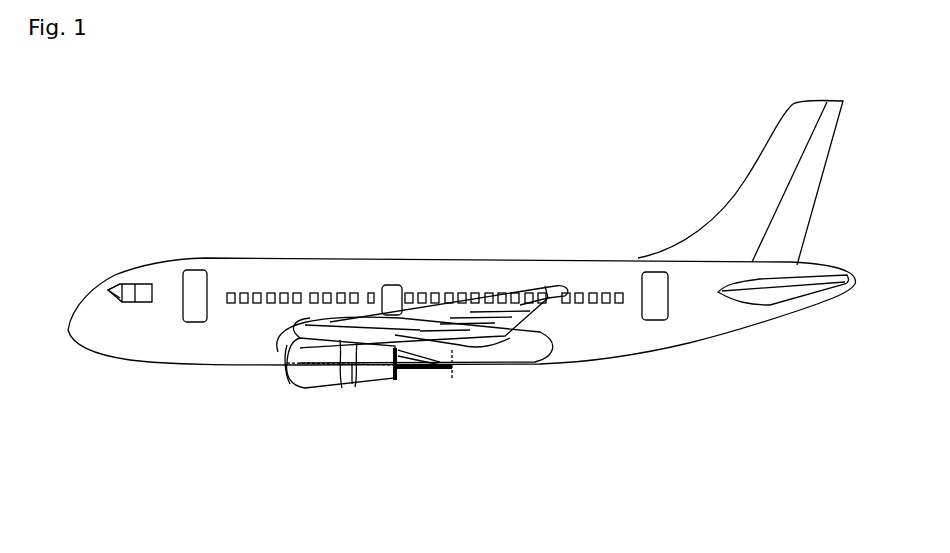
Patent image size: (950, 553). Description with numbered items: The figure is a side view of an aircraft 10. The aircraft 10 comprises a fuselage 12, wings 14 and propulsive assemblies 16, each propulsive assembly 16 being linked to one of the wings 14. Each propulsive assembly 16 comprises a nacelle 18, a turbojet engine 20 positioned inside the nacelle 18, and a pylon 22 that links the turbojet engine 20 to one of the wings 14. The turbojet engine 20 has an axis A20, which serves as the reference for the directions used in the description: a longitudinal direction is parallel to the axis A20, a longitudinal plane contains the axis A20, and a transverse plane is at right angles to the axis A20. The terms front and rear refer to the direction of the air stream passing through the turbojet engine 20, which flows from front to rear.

The aircraft 10 is at (197, 226).
The fuselage 12 is at (320, 258).
The wings 14 is at (428, 326).
The propulsive assembly 16 is at (318, 393).
The nacelle 18 is at (288, 372).
The turbojet engine 20 is at (400, 372).
The axis of the turbojet engine A20 is at (352, 384).
The pylon 22 is at (413, 345).